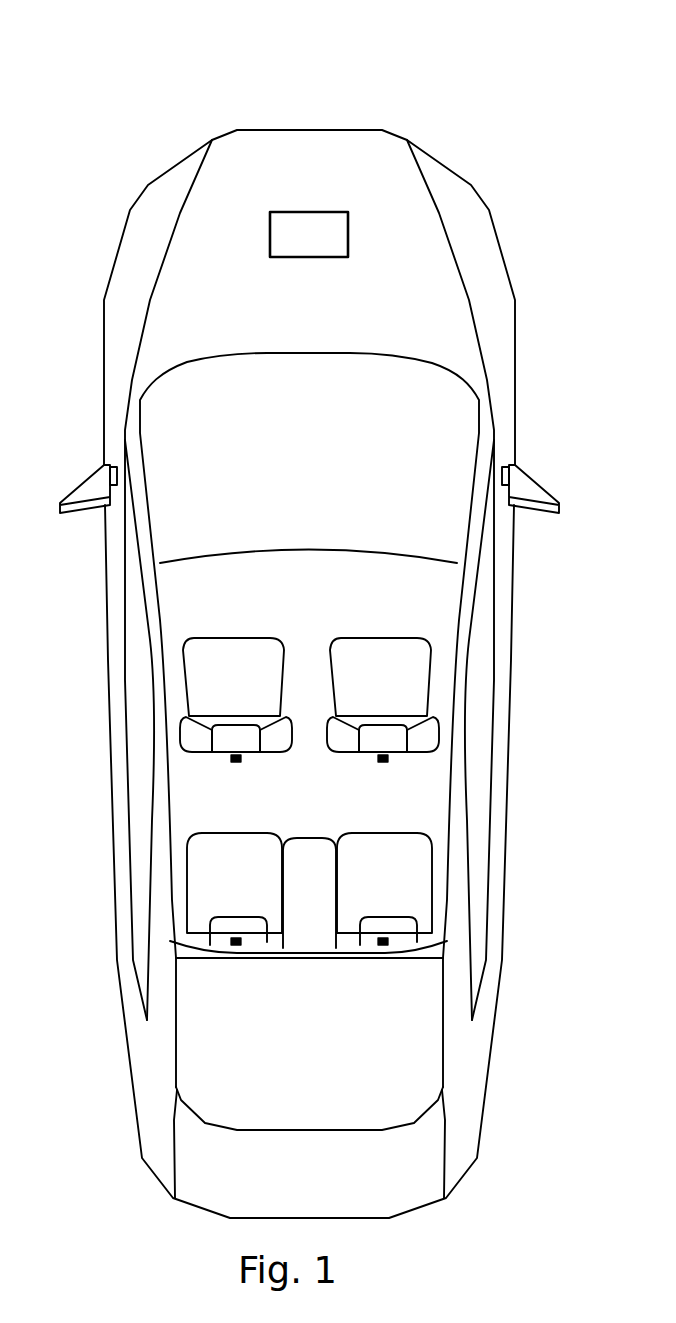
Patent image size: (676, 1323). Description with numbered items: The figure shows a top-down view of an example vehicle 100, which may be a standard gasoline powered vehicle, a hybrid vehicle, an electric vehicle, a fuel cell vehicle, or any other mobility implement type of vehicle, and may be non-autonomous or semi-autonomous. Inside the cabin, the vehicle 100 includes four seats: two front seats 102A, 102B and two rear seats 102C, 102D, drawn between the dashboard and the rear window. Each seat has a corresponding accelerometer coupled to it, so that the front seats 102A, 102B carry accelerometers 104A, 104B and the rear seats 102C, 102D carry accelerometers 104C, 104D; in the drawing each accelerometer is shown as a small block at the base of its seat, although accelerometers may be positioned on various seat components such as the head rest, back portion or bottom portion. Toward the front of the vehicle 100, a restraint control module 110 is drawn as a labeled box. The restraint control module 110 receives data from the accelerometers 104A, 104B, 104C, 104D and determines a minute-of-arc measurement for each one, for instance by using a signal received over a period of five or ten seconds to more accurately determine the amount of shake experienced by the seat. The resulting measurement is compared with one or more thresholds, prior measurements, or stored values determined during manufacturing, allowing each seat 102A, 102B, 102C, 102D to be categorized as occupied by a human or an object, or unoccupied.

The vehicle 100 is at (212, 140).
The restraint control module 110 is at (331, 247).
The seat 102A is at (223, 692).
The seat 102B is at (394, 692).
The seat 102C is at (223, 873).
The seat 102D is at (394, 873).
The accelerometer 104A is at (232, 760).
The accelerometer 104B is at (385, 760).
The accelerometer 104C is at (233, 944).
The accelerometer 104D is at (384, 944).